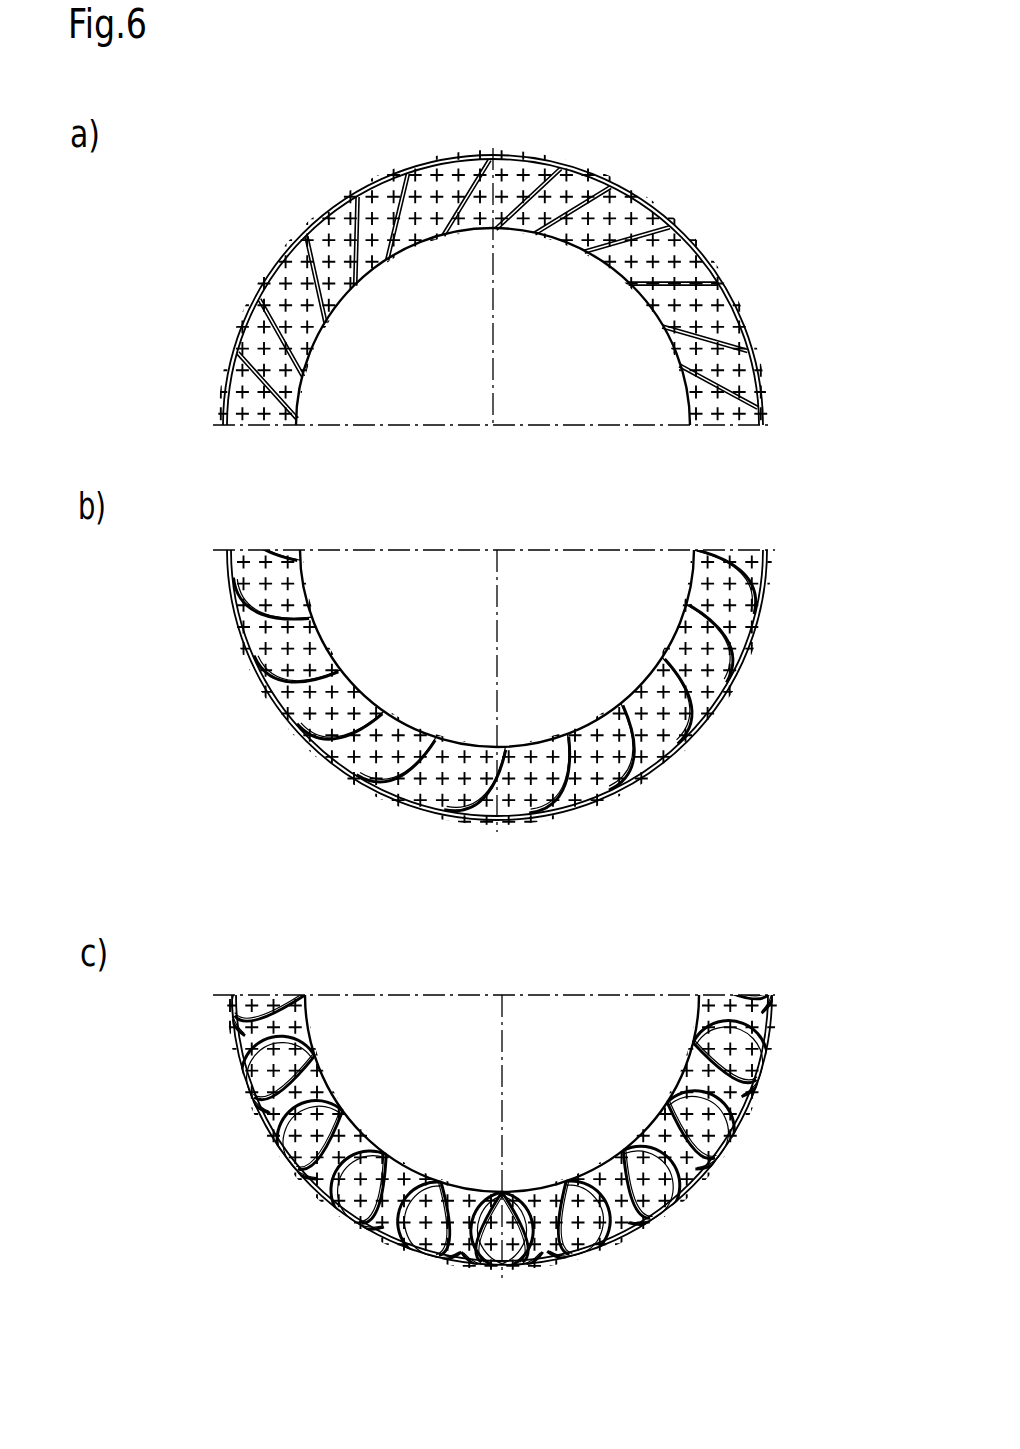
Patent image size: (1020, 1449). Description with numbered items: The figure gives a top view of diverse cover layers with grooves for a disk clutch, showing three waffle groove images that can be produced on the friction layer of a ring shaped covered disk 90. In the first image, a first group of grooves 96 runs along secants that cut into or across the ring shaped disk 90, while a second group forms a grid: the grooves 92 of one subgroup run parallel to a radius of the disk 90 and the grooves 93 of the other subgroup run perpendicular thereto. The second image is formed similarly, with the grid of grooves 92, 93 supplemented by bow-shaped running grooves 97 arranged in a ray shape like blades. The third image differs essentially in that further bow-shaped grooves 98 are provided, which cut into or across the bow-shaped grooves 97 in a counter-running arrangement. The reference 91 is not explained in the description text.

The ring shaped covered disk 90 is at (698, 188).
The ring wall with mesh structure 91 is at (712, 302).
The grooves of the one subgroup 92 is at (466, 757).
The grooves of the other subgroup 93 is at (743, 401).
The grooves of the first group 96 is at (244, 325).
The bow-shaped grooves 97 is at (234, 617).
The further bow-shaped grooves 98 is at (257, 997).